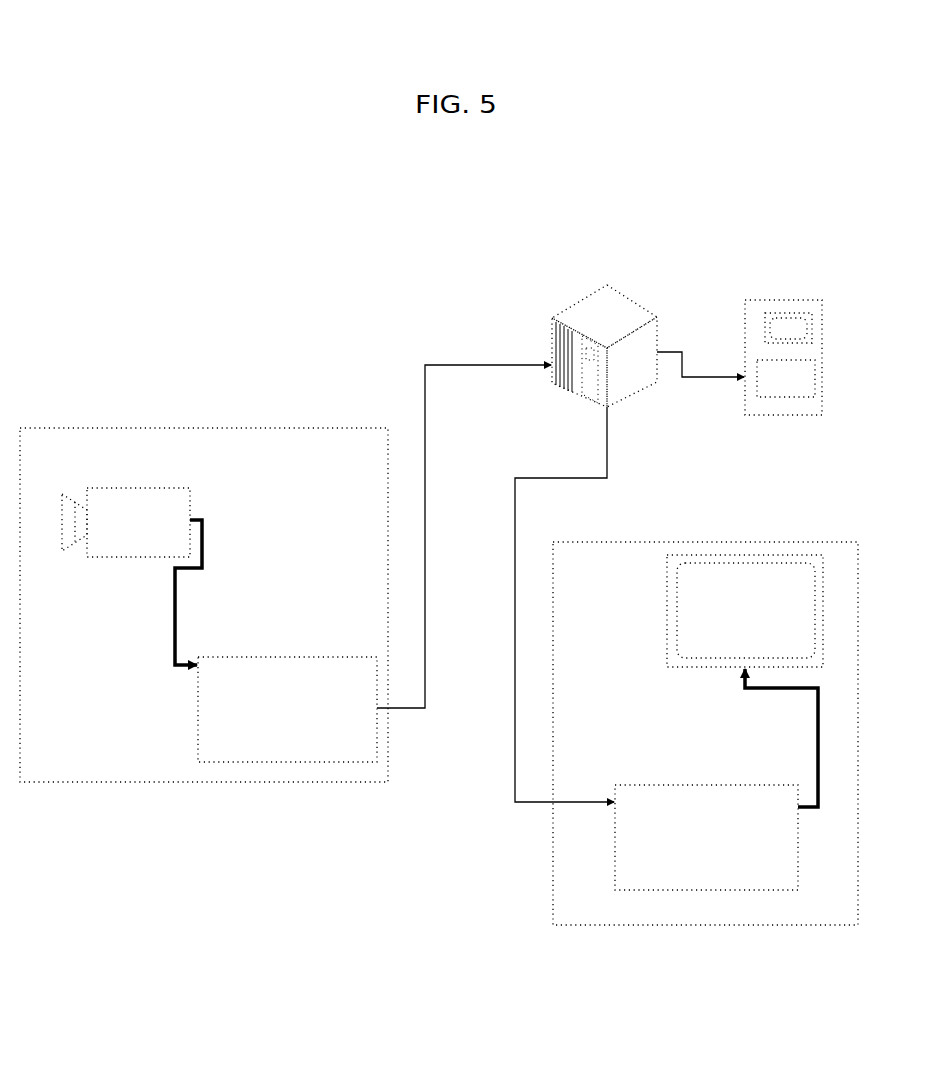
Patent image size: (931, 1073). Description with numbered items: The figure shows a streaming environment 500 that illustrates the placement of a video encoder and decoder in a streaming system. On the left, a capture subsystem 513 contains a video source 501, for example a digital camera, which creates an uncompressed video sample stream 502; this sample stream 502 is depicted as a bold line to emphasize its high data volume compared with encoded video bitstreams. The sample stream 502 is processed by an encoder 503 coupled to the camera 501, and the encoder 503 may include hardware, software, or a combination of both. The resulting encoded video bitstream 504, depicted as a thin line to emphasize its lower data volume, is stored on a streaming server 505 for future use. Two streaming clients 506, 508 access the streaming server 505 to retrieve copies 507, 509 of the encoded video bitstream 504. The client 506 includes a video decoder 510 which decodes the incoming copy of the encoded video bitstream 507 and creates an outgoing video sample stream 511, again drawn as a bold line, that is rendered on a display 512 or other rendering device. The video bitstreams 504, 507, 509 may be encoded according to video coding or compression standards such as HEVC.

The system 500 is at (100, 116).
The video source 501 is at (138, 488).
The uncompressed video sample stream 502 is at (173, 627).
The encoder 503 is at (298, 657).
The encoded video bitstream 504 is at (425, 392).
The streaming server 505 is at (553, 352).
The streaming client 506 is at (553, 918).
The copy of the encoded video bitstream 507 is at (515, 660).
The streaming client 508 is at (822, 333).
The copy of the encoded video bitstream 509 is at (682, 377).
The video decoder 510 is at (615, 870).
The outgoing video sample stream 511 is at (818, 740).
The display 512 is at (667, 618).
The capture subsystem 513 is at (130, 782).